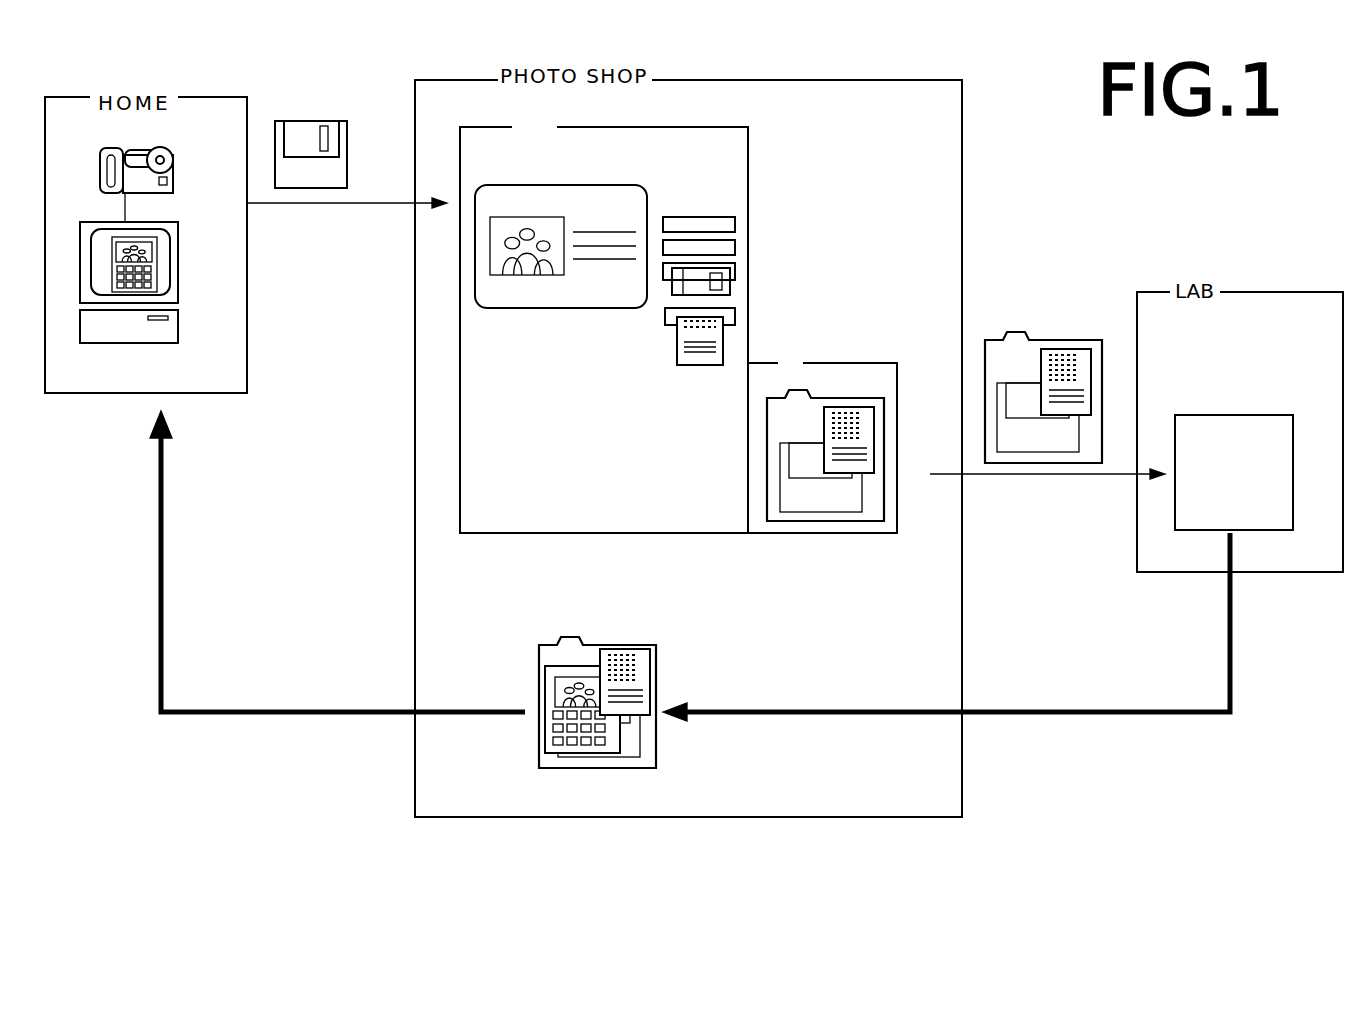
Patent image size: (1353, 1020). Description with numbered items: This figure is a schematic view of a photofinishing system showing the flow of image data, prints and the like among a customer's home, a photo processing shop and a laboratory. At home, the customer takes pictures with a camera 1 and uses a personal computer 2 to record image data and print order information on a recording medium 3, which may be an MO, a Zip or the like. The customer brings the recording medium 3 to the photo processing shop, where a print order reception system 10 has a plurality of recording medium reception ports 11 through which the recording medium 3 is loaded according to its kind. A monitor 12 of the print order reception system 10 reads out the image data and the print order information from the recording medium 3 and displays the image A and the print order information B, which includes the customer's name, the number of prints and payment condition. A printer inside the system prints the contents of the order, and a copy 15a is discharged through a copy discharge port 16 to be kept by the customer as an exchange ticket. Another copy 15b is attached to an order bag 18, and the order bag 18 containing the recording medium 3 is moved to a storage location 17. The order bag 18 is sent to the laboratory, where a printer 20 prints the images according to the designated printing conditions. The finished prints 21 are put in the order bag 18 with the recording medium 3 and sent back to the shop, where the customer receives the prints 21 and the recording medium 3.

The digital camera 1 is at (175, 181).
The personal computer 2 is at (178, 262).
The recording medium 3 is at (347, 145).
The print order reception system 10 is at (604, 325).
The recording medium reception ports 11 is at (729, 248).
The monitor 12 is at (550, 231).
The image A is at (490, 230).
The print order information B is at (617, 224).
The copy 15a is at (720, 347).
The copy 15b is at (875, 425).
The copy discharge port 16 is at (735, 318).
The storage location 17 is at (822, 442).
The order bag 18 is at (883, 398).
The printer 20 is at (1240, 415).
The prints 21 is at (543, 690).